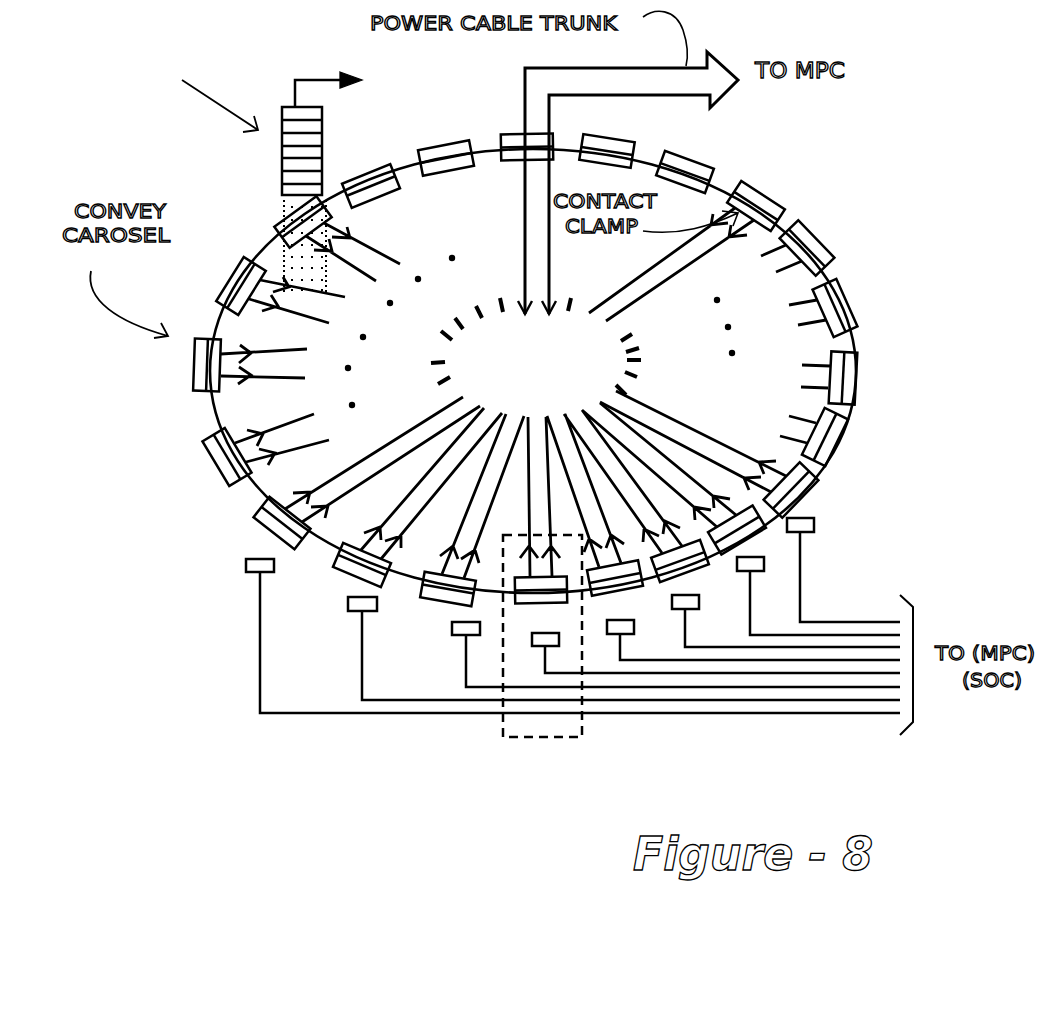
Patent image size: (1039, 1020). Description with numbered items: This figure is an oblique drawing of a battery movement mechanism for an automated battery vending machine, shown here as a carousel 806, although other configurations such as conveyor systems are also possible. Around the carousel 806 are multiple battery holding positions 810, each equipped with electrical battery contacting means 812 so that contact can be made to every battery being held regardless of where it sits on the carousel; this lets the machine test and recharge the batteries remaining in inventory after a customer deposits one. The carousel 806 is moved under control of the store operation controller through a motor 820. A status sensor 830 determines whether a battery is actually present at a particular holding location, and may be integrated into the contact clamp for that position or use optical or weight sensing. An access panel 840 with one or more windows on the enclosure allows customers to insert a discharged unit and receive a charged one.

The carousel 806 is at (873, 324).
The battery holding positions 810 is at (834, 460).
The electrical battery contacting means 812 is at (787, 452).
The motor 820 is at (283, 170).
The status sensor 830 is at (246, 563).
The access panel 840 is at (520, 722).